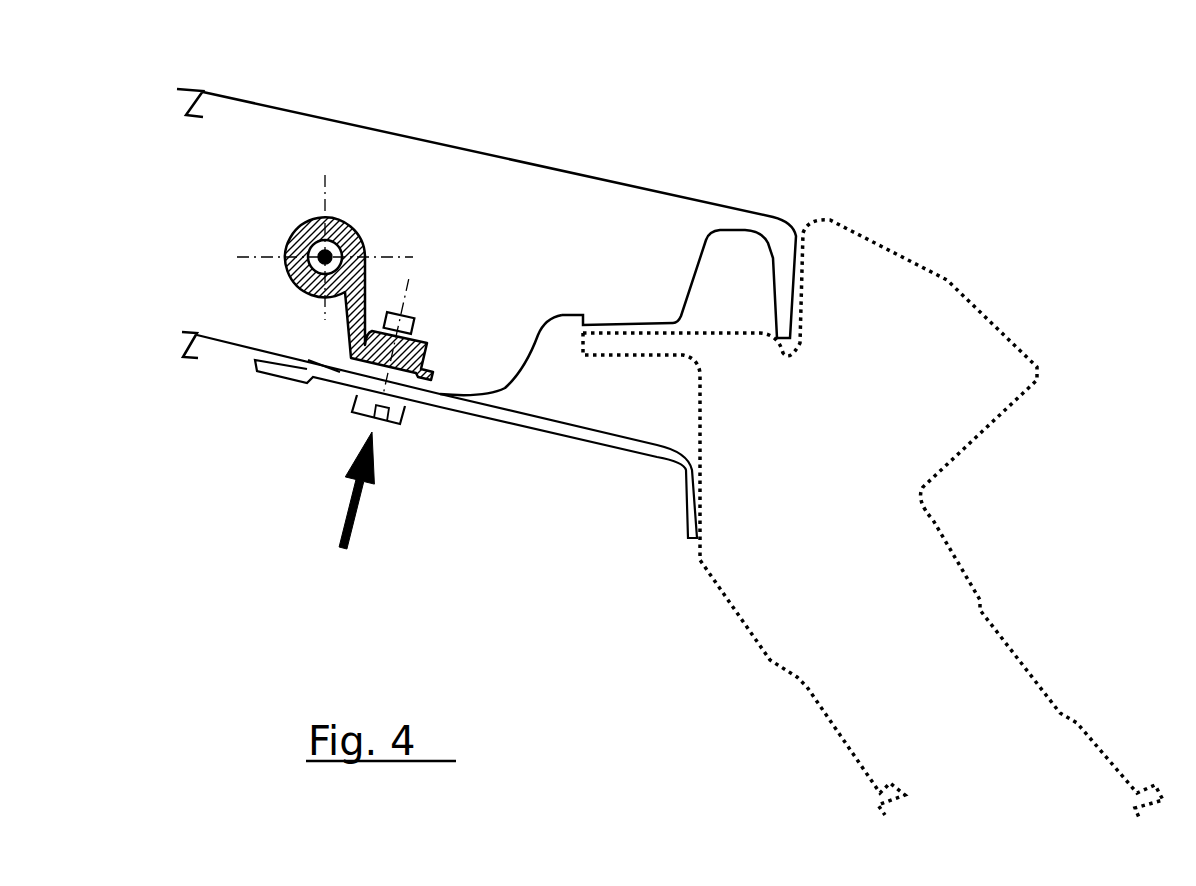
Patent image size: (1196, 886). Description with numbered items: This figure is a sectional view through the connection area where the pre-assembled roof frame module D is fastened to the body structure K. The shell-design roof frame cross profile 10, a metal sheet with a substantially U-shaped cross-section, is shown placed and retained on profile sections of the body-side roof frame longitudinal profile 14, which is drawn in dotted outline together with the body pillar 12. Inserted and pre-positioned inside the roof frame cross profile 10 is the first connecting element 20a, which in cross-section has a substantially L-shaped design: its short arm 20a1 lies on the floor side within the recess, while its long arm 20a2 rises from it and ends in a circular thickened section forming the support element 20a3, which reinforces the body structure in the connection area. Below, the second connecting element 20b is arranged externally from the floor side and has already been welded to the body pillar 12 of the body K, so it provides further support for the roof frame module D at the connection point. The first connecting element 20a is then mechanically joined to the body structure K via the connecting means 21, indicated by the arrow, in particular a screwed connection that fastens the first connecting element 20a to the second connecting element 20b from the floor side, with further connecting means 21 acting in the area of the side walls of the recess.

The roof frame cross profile 10 is at (257, 135).
The body pillar 12 is at (922, 667).
The roof frame longitudinal profile 14 is at (897, 315).
The first connecting element 20a is at (367, 308).
The short arm 20a1 is at (488, 355).
The long arm 20a2 is at (348, 327).
The support element 20a3 is at (318, 218).
The second connecting element 20b is at (610, 455).
The connecting means 21 is at (376, 494).
The roof frame module D is at (681, 96).
The body structure K is at (1122, 406).